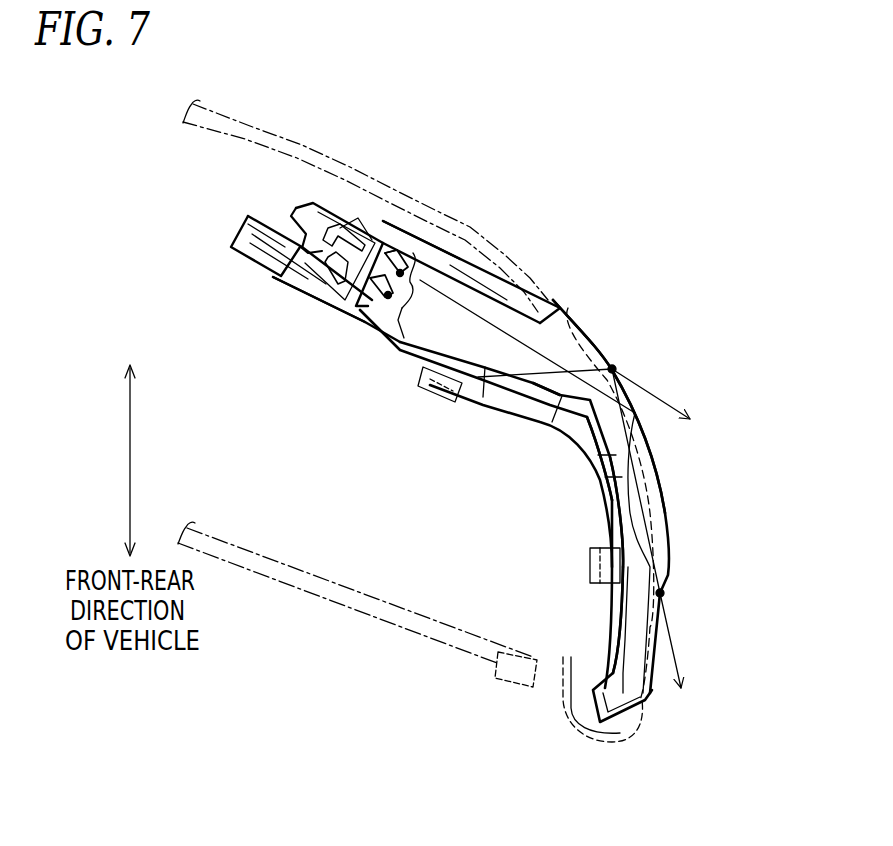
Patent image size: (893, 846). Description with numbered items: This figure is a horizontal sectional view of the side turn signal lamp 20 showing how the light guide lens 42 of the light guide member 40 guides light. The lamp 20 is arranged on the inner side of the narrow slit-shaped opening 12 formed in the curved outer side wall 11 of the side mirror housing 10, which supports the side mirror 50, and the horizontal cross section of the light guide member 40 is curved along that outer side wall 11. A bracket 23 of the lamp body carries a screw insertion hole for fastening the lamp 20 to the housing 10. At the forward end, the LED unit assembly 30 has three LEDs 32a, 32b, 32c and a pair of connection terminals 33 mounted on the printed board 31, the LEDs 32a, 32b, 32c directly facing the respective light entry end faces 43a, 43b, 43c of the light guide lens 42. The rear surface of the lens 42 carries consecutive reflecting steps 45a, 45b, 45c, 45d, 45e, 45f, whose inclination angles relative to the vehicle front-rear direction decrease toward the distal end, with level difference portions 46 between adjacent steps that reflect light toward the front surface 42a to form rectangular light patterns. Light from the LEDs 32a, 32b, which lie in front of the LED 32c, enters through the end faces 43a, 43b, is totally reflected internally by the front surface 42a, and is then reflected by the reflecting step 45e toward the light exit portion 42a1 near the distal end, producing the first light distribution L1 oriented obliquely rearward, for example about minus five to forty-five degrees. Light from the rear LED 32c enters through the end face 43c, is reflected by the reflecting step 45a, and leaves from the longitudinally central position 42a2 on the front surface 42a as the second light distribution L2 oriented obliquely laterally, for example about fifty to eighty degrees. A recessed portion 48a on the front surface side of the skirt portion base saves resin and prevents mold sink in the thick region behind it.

The side mirror housing 10 is at (384, 179).
The outer side wall 11 is at (575, 727).
The opening 12 is at (568, 308).
The side turn signal lamp 20 is at (722, 164).
The bracket 23 is at (420, 388).
The LED unit assembly 30 is at (323, 222).
The printed board 31 is at (378, 250).
The LED 32a is at (397, 262).
The LED 32b is at (421, 240).
The LED 32c is at (385, 320).
The connection terminals 33 is at (250, 232).
The light guide member 40 is at (598, 342).
The light guide lens 42 is at (582, 335).
The front surface 42a is at (667, 523).
The light exit portion 42a1 is at (663, 592).
The longitudinal central position 42a2 is at (613, 368).
The light entry end face 43a is at (507, 293).
The light entry end face 43b is at (391, 251).
The light entry end face 43c is at (383, 302).
The reflecting step 45a is at (462, 417).
The reflecting step 45b is at (545, 408).
The reflecting step 45c is at (590, 422).
The reflecting step 45d is at (607, 474).
The reflecting step 45e is at (627, 540).
The reflecting step 45f is at (620, 590).
The level difference portion 46 is at (485, 370).
The recessed portion 48a is at (537, 290).
The side mirror 50 is at (374, 622).
The first light distribution L1 is at (653, 540).
The second light distribution L2 is at (667, 400).